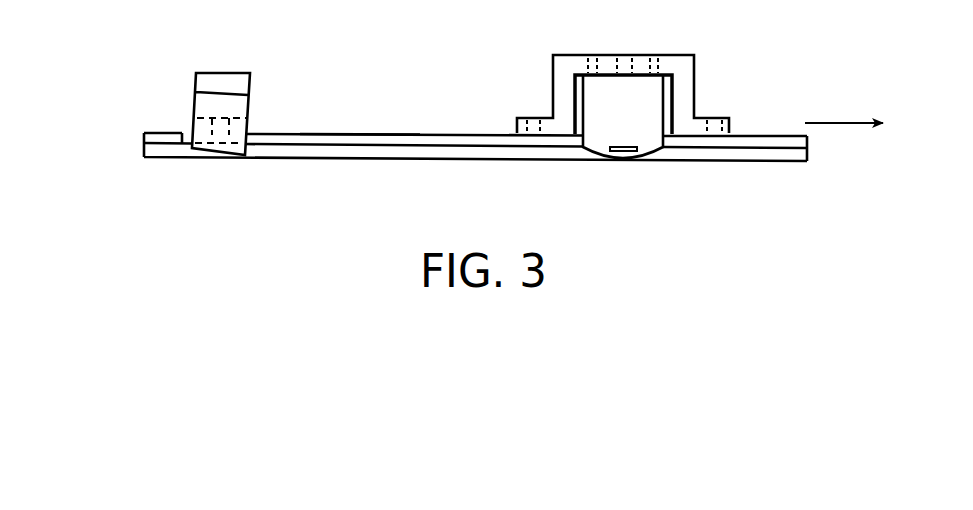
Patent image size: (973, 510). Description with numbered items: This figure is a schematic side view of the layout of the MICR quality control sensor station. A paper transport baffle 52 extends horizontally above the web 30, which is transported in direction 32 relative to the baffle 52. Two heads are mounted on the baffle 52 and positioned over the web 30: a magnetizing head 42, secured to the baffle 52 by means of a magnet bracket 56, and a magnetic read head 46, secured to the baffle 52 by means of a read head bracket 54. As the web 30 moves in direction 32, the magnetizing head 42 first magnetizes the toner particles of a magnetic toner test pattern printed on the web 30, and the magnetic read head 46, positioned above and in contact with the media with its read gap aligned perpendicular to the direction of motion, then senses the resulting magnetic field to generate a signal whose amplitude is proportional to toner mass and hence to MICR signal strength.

The web 30 is at (290, 163).
The direction 32 is at (866, 127).
The magnetizing head 42 is at (188, 163).
The magnetic read head 46 is at (618, 120).
The paper transport baffle 52 is at (427, 130).
The read head bracket 54 is at (700, 80).
The magnet bracket 56 is at (196, 80).